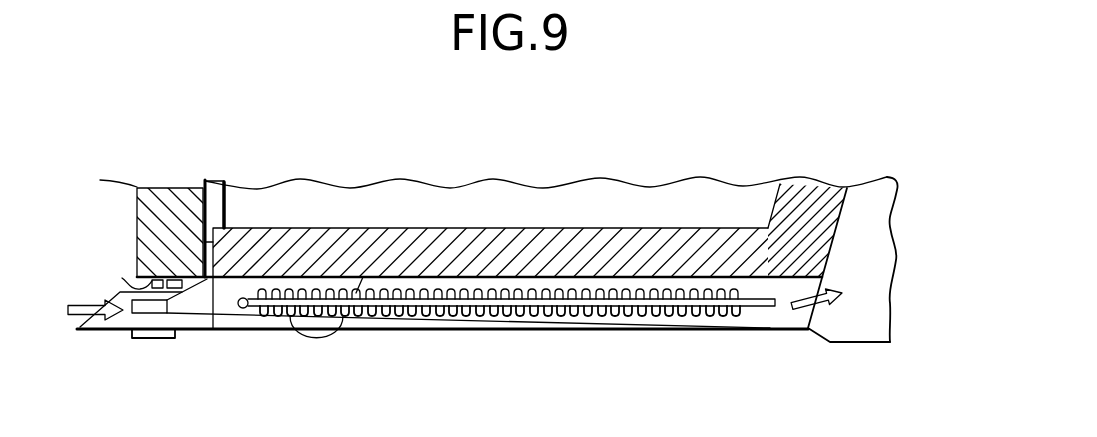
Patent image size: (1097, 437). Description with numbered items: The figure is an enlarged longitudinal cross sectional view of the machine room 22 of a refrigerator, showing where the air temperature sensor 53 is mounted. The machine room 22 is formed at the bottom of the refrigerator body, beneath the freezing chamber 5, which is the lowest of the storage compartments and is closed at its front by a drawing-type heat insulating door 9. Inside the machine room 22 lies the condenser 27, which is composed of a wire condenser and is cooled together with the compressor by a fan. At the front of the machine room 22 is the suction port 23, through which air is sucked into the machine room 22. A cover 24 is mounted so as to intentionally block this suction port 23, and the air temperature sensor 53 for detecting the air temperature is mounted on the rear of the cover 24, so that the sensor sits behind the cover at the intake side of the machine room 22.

The freezing chamber 5 is at (507, 195).
The heat insulating door 9 is at (150, 221).
The machine room 22 is at (862, 257).
The suction port 23 is at (215, 320).
The cover 24 is at (187, 320).
The condenser 27 is at (490, 312).
The air temperature sensor 53 is at (122, 278).